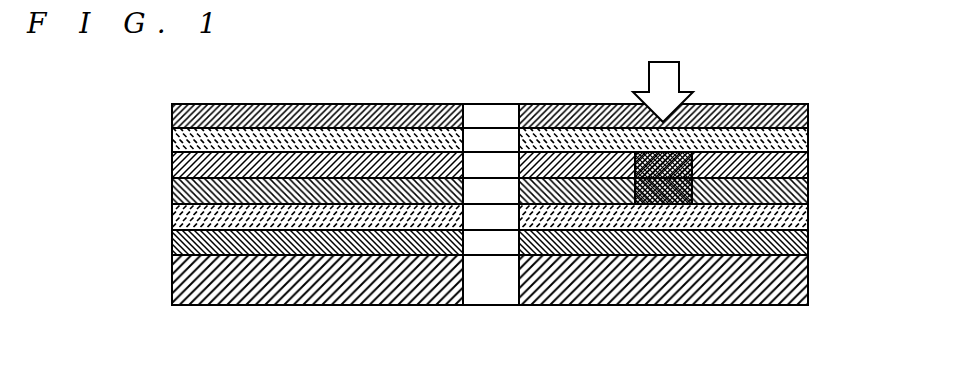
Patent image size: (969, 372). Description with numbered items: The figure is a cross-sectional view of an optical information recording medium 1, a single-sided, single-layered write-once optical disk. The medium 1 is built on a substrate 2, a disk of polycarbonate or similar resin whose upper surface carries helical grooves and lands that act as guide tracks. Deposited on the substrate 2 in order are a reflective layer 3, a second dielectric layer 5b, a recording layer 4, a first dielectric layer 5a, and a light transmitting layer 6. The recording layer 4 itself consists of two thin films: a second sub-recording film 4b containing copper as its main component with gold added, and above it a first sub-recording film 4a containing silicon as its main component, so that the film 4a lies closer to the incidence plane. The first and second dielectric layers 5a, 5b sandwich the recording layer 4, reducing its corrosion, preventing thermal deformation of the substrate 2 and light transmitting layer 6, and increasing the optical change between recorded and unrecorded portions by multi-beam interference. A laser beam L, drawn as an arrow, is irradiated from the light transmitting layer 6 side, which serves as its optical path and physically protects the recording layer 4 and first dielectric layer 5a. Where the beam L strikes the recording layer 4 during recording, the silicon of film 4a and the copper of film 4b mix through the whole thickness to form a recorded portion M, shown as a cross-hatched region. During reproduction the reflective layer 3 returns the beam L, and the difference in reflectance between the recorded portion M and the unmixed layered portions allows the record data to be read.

The optical information recording medium 1 is at (498, 68).
The substrate 2 is at (808, 278).
The reflective layer 3 is at (808, 240).
The recording layer 4 is at (546, 180).
The first sub-recording film 4a is at (808, 166).
The second sub-recording film 4b is at (808, 190).
The first dielectric layer 5a is at (808, 143).
The second dielectric layer 5b is at (808, 213).
The light transmitting layer 6 is at (808, 117).
The recorded portion M is at (660, 204).
The laser beam L is at (649, 78).